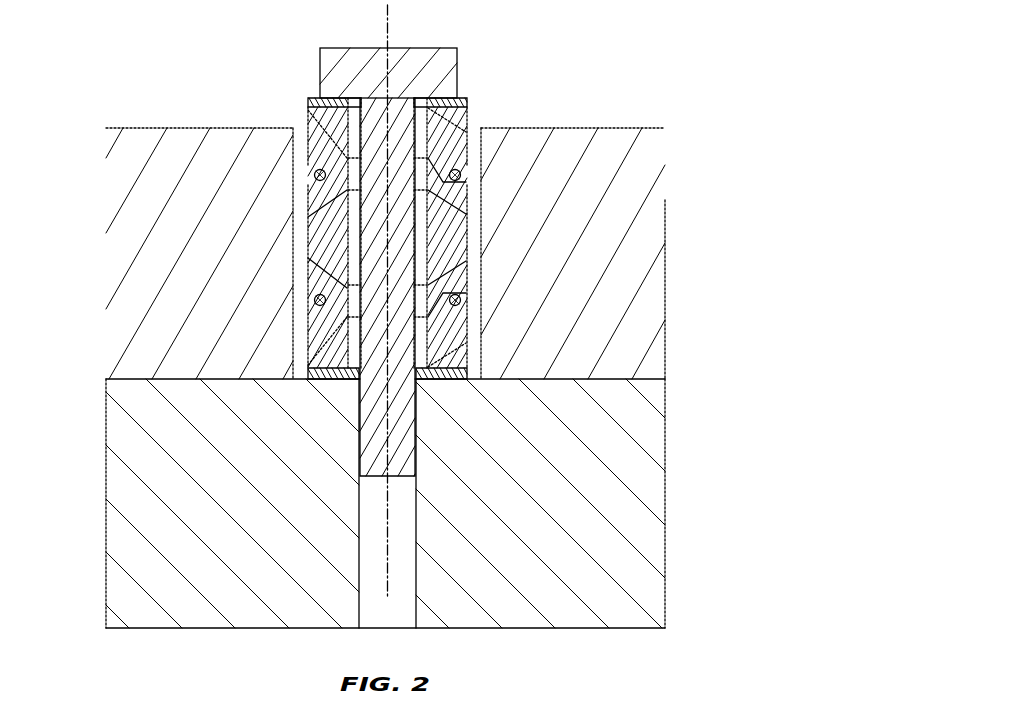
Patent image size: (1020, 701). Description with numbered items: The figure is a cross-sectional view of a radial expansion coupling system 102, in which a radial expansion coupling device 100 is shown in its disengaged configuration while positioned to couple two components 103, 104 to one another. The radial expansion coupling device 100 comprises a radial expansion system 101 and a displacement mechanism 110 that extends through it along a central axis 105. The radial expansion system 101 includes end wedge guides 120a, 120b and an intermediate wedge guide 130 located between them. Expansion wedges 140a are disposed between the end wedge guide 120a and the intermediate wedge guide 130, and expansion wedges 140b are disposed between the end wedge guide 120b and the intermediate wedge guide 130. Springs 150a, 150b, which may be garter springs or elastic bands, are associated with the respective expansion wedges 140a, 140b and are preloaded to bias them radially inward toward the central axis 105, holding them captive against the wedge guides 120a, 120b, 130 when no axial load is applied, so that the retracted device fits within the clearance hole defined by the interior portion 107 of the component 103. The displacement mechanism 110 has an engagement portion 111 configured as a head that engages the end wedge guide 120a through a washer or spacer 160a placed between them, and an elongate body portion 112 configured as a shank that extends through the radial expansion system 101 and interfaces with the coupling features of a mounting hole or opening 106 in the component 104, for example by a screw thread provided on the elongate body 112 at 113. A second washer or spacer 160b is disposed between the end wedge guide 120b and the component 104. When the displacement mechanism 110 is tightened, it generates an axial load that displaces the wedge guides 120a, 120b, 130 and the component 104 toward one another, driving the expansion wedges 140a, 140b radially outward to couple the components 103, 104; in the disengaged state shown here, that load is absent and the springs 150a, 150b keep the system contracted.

The radial expansion coupling device 100 is at (500, 69).
The radial expansion system 101 is at (473, 108).
The radial expansion coupling system 102 is at (240, 40).
The component 103 is at (178, 127).
The component 104 is at (186, 630).
The central axis 105 is at (385, 25).
The mounting hole or opening 106 is at (399, 614).
The interior portion 107 is at (478, 148).
The displacement mechanism 110 is at (445, 33).
The engagement portion 111 is at (457, 52).
The elongate body portion 112 is at (428, 232).
The screw thread 113 is at (425, 448).
The end wedge guide 120a is at (306, 118).
The end wedge guide 120b is at (306, 372).
The intermediate wedge guide 130 is at (345, 235).
The expansion wedges 140a is at (306, 195).
The expansion wedges 140b is at (306, 275).
The spring 150a is at (314, 175).
The spring 150b is at (314, 300).
The washer or spacer 160a is at (318, 97).
The washer or spacer 160b is at (325, 376).